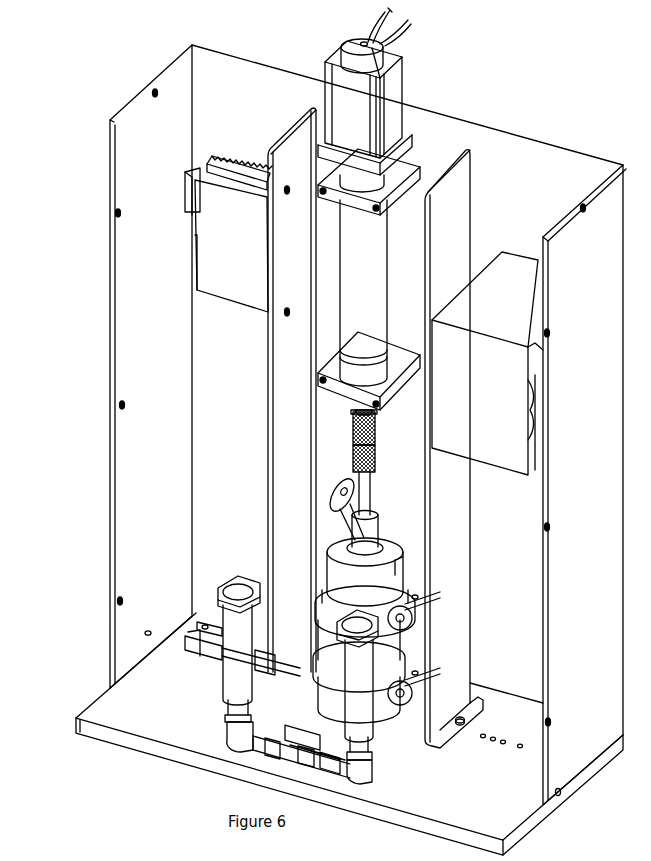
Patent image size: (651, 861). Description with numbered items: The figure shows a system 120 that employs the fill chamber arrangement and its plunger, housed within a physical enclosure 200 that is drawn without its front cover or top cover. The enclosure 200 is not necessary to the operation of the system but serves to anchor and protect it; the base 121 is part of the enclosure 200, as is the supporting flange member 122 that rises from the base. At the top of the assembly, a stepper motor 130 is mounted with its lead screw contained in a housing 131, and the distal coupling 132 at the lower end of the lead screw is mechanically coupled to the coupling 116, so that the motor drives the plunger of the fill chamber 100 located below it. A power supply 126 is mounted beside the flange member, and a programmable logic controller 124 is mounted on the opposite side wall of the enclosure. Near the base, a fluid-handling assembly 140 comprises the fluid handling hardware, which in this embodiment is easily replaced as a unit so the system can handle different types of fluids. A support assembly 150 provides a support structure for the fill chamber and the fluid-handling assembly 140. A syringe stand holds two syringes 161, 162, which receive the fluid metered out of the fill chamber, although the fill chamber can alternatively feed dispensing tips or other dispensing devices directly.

The physical enclosure 200 is at (101, 336).
The system 120 is at (117, 769).
The base 121 is at (90, 700).
The supporting flange member 122 is at (268, 425).
The programmable logic controller (PLC) 124 is at (492, 450).
The power supply 126 is at (228, 287).
The stepper motor 130 is at (403, 90).
The housing 131 is at (373, 272).
The distal coupling 132 is at (377, 427).
The coupling 116 is at (377, 462).
The valve 100 is at (380, 500).
The support assembly 150 is at (387, 658).
The fluid-handling assembly 140 is at (191, 714).
The syringe 161 is at (222, 680).
The syringe 162 is at (370, 738).